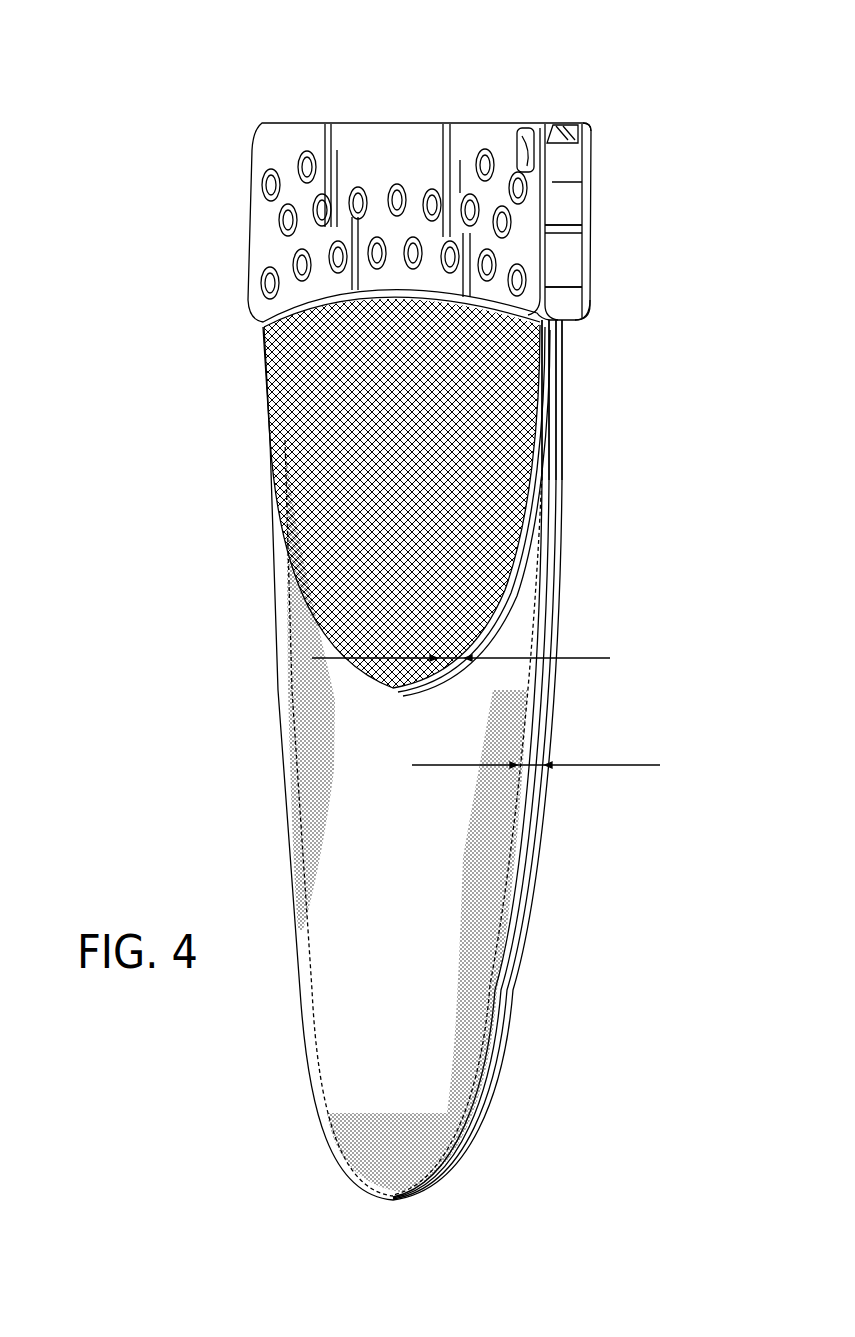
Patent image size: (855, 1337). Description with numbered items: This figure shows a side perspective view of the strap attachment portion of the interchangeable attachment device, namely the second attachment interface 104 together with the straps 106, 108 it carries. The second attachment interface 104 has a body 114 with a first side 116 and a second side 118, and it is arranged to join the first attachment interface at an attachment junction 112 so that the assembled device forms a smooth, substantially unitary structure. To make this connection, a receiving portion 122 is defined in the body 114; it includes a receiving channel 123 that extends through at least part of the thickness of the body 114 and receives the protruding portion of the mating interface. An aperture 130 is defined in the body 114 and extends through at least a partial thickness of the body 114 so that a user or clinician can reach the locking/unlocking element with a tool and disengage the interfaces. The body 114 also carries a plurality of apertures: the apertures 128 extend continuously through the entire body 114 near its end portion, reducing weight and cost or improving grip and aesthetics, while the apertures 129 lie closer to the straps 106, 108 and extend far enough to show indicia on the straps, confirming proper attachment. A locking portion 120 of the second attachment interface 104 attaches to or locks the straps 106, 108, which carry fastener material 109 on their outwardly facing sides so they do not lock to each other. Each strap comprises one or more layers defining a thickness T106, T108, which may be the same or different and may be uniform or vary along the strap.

The second attachment interface 104 is at (572, 217).
The strap 106 is at (472, 497).
The strap 108 is at (457, 723).
The fastener material 109 is at (443, 590).
The attachment junction 112 is at (598, 130).
The body 114 is at (570, 260).
The first side 116 is at (542, 350).
The second side 118 is at (588, 307).
The locking portion 120 is at (572, 298).
The receiving portion 122 is at (552, 120).
The receiving channel 123 is at (587, 127).
The apertures 128 is at (274, 172).
The apertures 129 is at (397, 190).
The aperture 130 is at (513, 143).
The thickness of strap T106 is at (486, 661).
The thickness of strap T108 is at (563, 768).